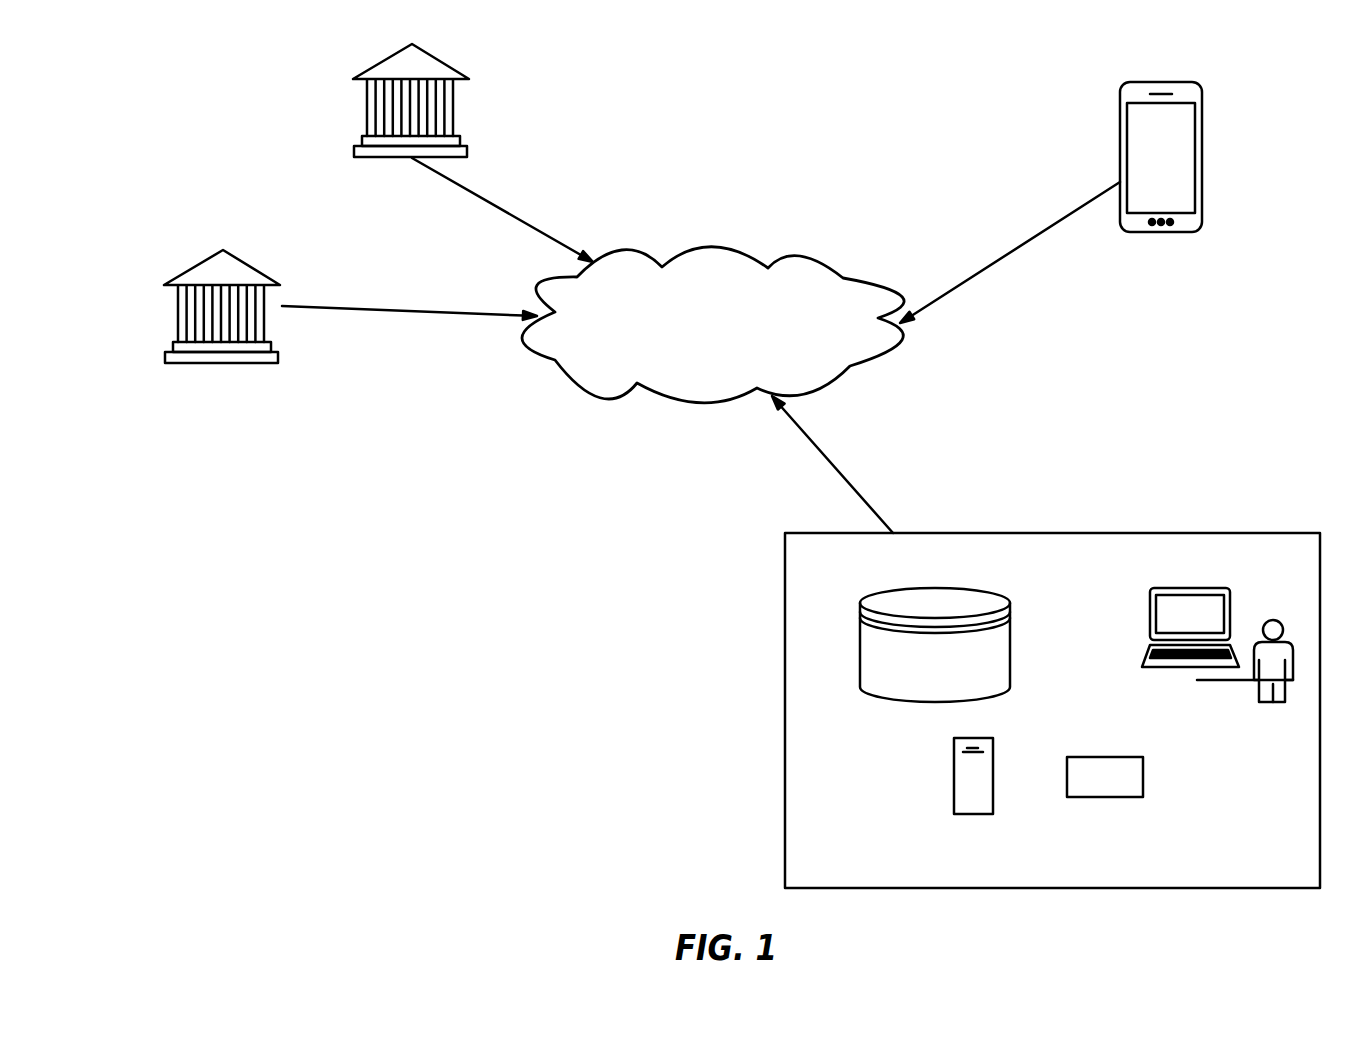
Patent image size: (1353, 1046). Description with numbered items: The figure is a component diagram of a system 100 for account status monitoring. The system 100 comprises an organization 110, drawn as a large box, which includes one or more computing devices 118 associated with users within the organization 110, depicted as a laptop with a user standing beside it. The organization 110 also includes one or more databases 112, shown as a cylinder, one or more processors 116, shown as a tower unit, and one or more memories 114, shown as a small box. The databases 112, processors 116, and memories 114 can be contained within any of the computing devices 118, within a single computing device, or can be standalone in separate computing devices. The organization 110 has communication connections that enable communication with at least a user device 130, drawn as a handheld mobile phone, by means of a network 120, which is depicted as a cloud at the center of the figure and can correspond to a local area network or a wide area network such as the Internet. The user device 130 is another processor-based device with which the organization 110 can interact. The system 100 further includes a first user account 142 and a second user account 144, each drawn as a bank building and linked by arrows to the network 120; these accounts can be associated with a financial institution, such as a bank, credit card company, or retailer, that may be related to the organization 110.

The system 100 is at (276, 612).
The organization 110 is at (1283, 864).
The databases 112 is at (957, 680).
The memories 114 is at (1124, 791).
The processors 116 is at (954, 790).
The computing devices 118 is at (1150, 620).
The network 120 is at (732, 336).
The user device 130 is at (1195, 86).
The first user account 142 is at (181, 306).
The second user account 144 is at (353, 154).